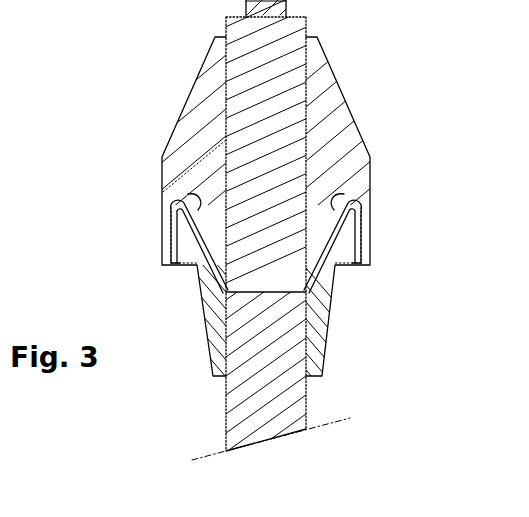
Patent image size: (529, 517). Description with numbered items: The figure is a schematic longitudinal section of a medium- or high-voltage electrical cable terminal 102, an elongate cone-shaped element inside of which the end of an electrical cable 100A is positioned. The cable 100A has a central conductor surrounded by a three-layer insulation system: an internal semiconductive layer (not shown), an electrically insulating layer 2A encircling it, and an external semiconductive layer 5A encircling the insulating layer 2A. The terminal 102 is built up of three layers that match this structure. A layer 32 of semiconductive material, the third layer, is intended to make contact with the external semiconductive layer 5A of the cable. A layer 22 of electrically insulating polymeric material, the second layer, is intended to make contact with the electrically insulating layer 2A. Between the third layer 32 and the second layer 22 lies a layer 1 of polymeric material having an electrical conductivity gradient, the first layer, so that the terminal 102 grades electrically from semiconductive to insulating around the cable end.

The layer of polymeric material having an electrical conductivity gradient 1 is at (197, 193).
The electrically insulating layer 2A is at (310, 20).
The external semiconductive layer 5A is at (292, 404).
The layer of electrically insulating polymeric material 22 is at (328, 110).
The layer of semiconductive material 32 is at (340, 250).
The electrical cable 100A is at (224, 410).
The electrical cable terminal 102 is at (378, 131).